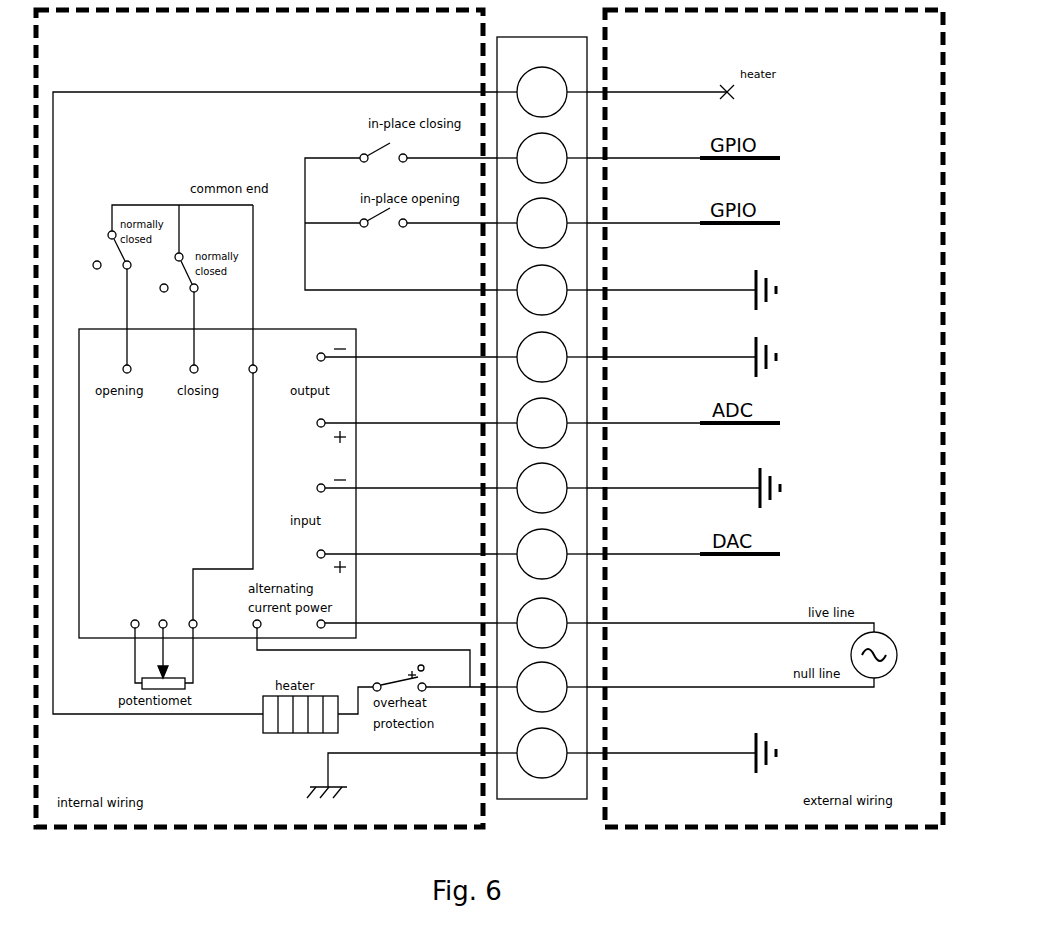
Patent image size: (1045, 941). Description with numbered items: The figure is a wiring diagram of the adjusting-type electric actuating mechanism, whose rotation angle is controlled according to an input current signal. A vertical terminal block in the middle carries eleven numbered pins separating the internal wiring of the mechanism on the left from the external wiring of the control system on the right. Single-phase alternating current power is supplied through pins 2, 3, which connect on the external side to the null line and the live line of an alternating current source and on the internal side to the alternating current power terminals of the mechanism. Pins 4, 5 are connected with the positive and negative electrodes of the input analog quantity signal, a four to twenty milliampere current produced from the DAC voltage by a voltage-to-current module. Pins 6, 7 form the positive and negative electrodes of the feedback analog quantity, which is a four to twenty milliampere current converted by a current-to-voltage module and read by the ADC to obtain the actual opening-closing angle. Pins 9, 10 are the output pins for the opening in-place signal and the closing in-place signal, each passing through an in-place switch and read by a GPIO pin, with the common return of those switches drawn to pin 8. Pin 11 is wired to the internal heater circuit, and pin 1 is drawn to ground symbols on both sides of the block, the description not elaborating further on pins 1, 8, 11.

The pin 1 is at (542, 753).
The pin 2 is at (542, 687).
The pin 3 is at (542, 623).
The pin 4 is at (542, 554).
The pin 5 is at (542, 488).
The pin 6 is at (542, 423).
The pin 7 is at (542, 357).
The pin 8 is at (542, 290).
The pin 9 is at (542, 223).
The pin 10 is at (542, 158).
The pin 11 is at (542, 92).